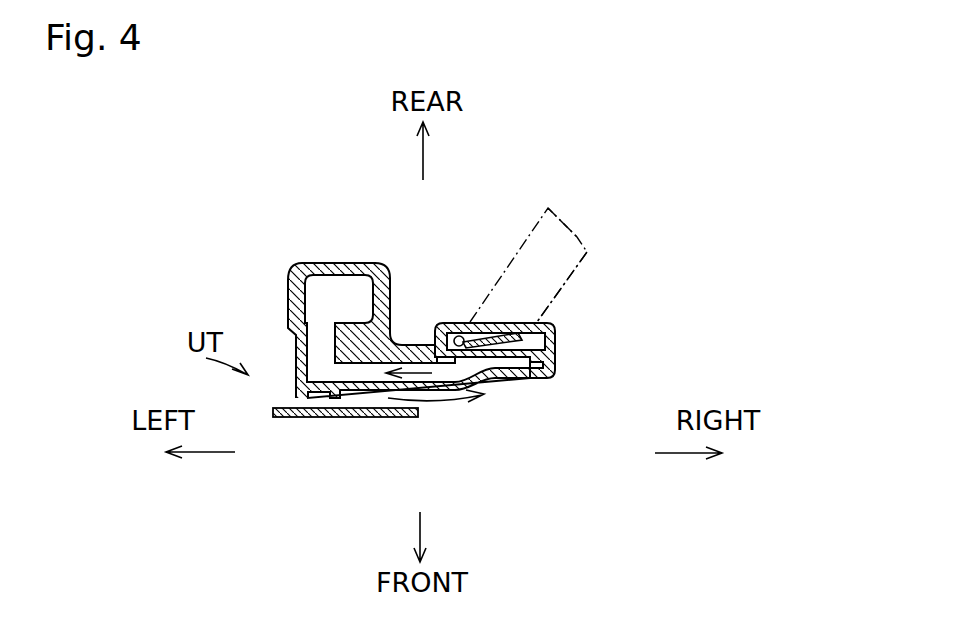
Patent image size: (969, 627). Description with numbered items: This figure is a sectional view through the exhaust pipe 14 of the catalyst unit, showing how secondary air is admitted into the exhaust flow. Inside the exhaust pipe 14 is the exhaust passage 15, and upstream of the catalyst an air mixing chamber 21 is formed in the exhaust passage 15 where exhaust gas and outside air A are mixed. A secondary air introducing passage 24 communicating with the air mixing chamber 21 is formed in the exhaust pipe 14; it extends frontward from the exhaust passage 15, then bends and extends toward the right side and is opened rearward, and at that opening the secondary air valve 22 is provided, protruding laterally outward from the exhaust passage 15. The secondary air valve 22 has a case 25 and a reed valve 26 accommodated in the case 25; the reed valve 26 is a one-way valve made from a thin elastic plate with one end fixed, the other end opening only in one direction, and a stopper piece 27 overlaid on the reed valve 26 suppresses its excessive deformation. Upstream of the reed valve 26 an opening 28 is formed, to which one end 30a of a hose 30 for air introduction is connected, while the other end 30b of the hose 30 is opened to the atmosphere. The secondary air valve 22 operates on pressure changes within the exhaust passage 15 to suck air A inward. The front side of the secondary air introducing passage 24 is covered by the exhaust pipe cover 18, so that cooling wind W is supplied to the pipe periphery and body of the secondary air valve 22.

The exhaust pipe 14 is at (280, 270).
The exhaust passage 15 is at (330, 292).
The exhaust pipe cover 18 is at (360, 418).
The air mixing chamber 21 is at (350, 302).
The secondary air valve 22 is at (583, 335).
The secondary air introducing passage 24 is at (457, 393).
The case 25 is at (557, 345).
The reed valve 26 is at (520, 381).
The stopper piece 27 is at (508, 332).
The opening 28 is at (460, 334).
The hose 30 is at (485, 278).
The one end of hose 30a is at (540, 314).
The other end of hose 30b is at (583, 228).
The air A is at (418, 370).
The cooling wind W is at (433, 401).